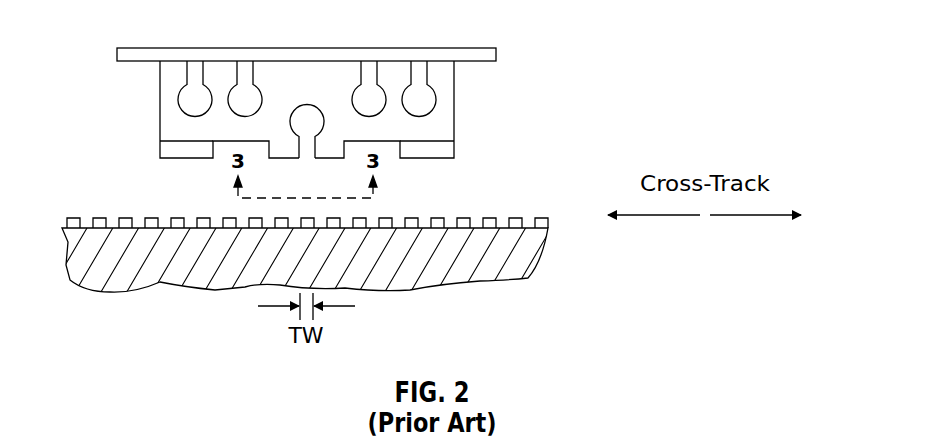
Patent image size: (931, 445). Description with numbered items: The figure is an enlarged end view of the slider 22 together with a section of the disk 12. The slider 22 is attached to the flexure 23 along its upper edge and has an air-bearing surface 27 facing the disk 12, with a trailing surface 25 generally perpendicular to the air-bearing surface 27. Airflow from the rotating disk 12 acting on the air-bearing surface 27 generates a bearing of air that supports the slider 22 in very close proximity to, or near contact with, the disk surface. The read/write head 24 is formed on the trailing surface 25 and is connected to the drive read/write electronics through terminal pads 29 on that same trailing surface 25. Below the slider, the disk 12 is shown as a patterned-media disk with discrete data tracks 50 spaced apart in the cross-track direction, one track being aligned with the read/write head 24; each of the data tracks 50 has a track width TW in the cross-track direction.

The disk 12 is at (533, 254).
The slider 22 is at (456, 131).
The flexure 23 is at (482, 52).
The read/write head 24 is at (300, 113).
The trailing surface 25 is at (178, 134).
The air-bearing surface 27 is at (186, 160).
The terminal pads 29 is at (185, 100).
The discrete data tracks 50 is at (73, 216).